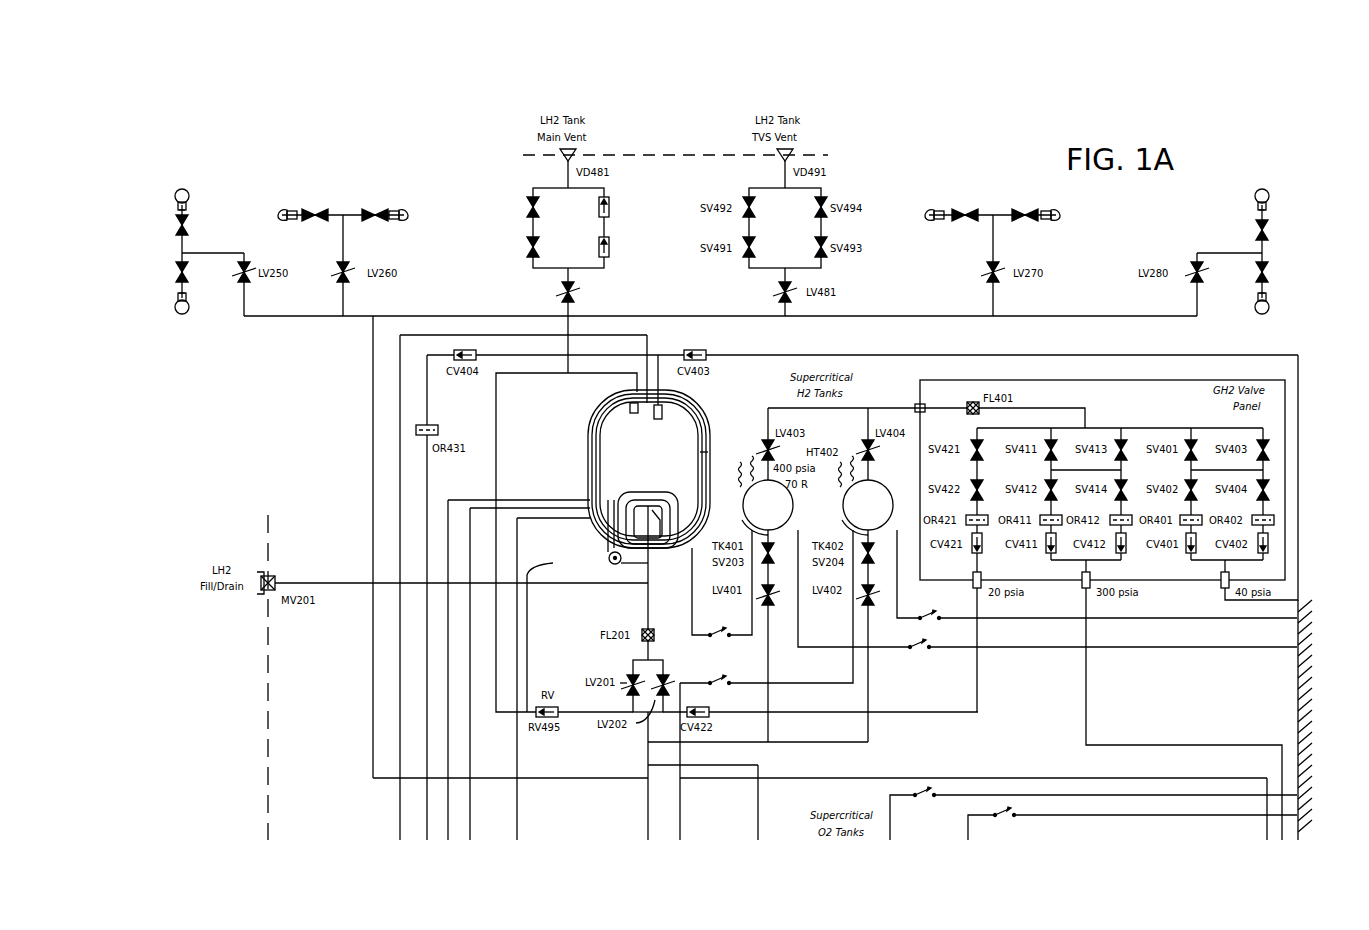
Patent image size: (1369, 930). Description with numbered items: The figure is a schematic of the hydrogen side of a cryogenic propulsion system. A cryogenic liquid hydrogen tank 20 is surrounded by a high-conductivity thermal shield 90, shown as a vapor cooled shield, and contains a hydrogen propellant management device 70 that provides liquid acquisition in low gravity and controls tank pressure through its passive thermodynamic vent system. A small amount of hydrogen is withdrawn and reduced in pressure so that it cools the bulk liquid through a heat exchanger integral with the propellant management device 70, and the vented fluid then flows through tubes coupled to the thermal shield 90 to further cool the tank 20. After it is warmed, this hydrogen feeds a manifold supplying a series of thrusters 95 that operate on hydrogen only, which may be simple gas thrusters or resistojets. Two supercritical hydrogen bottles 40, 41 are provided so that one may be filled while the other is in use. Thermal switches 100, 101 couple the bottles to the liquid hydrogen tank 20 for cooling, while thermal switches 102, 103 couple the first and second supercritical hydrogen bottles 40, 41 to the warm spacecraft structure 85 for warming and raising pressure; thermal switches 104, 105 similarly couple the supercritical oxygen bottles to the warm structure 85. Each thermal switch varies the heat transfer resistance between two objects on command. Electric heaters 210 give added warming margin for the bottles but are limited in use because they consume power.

The thrusters 95 is at (183, 185).
The cryogenic liquid hydrogen tank 20 is at (611, 373).
The high-conductivity thermal shield 90 is at (600, 537).
The hydrogen propellant management device 70 is at (527, 643).
The electric heaters 210 is at (775, 467).
The supercritical hydrogen bottle 40 is at (796, 500).
The second supercritical hydrogen bottle 41 is at (888, 492).
The thermal switch 100 is at (722, 632).
The thermal switch 101 is at (722, 680).
The thermal switch 102 is at (932, 615).
The thermal switch 103 is at (910, 645).
The thermal switch 104 is at (918, 792).
The thermal switch 105 is at (998, 812).
The warm spacecraft structure 85 is at (1302, 770).